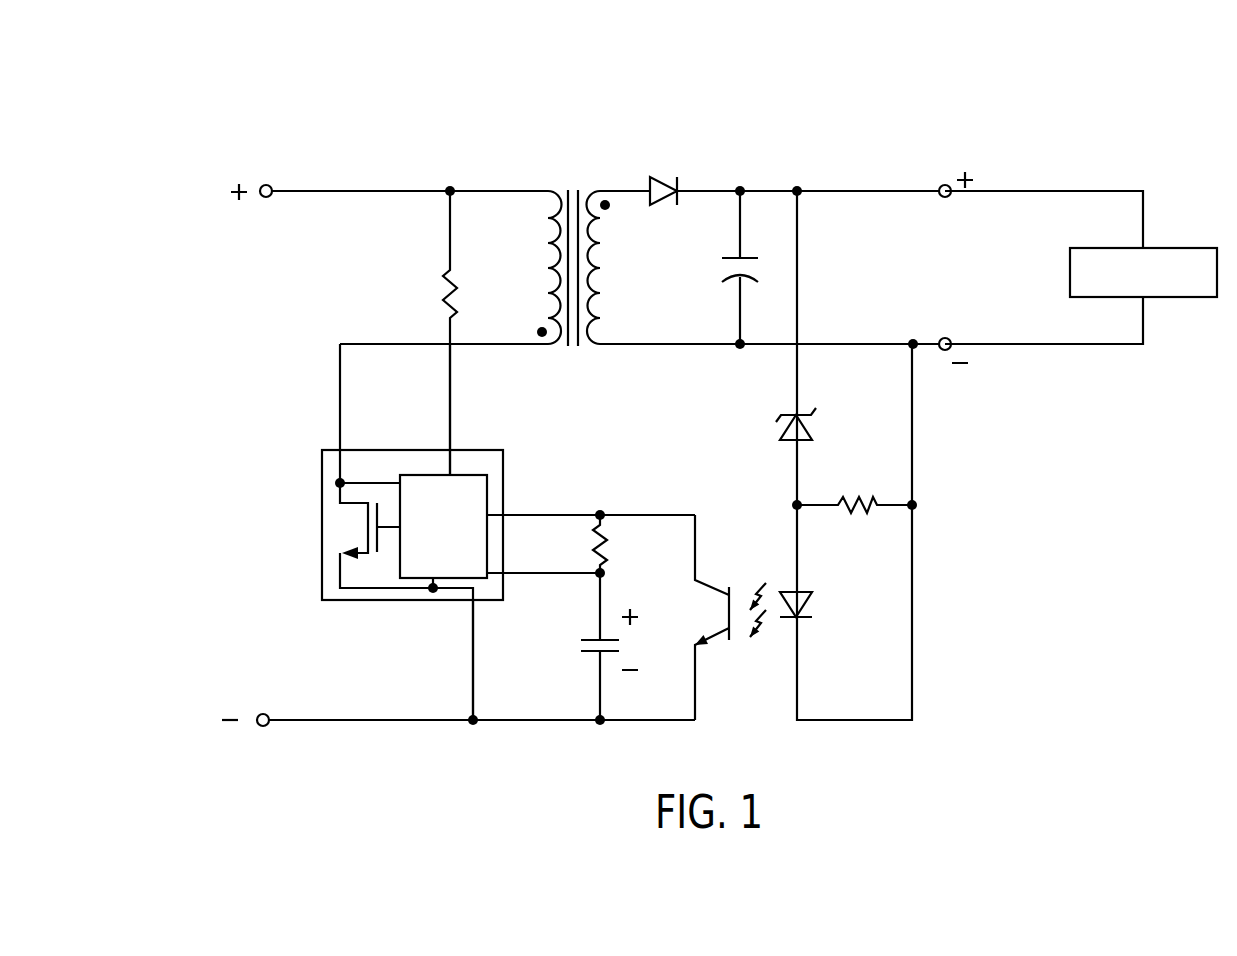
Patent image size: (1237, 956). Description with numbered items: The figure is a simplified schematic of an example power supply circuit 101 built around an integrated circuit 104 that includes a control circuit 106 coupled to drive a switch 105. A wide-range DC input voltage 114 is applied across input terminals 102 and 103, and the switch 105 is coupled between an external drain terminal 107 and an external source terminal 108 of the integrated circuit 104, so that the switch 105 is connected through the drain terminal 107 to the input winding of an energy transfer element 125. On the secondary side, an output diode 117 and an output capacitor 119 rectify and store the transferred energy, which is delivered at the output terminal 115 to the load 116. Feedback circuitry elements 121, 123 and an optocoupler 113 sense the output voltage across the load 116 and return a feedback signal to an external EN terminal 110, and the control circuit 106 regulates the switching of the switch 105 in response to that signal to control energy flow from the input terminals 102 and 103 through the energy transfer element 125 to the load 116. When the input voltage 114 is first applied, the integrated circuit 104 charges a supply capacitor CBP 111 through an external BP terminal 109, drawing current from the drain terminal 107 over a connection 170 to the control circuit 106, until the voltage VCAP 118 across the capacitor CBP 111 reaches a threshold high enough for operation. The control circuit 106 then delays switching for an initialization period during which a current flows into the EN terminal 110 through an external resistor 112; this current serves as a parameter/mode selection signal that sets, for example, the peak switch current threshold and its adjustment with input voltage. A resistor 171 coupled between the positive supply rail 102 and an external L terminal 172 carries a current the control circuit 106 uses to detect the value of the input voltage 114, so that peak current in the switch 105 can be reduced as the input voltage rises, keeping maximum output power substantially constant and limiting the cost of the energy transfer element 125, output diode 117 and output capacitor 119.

The power supply circuit 101 is at (1176, 100).
The input terminal 102 is at (232, 198).
The input terminal 103 is at (258, 702).
The integrated circuit 104 is at (332, 602).
The switch 105 is at (343, 527).
The control circuit 106 is at (417, 580).
The drain terminal 107 is at (332, 420).
The source terminal 108 is at (457, 642).
The BP terminal 109 is at (513, 573).
The EN terminal 110 is at (552, 492).
The supply capacitor CBP 111 is at (558, 667).
The resistor 112 is at (610, 542).
The optocoupler 113 is at (752, 648).
The DC input voltage 114 is at (207, 435).
The output terminal 115 is at (950, 173).
The load 116 is at (1170, 247).
The output diode 117 is at (663, 177).
The voltage VCAP 118 is at (653, 673).
The output capacitor 119 is at (713, 270).
The feedback circuitry element 121 is at (777, 432).
The feedback circuitry element 123 is at (858, 493).
The energy transfer element 125 is at (573, 185).
The connection 170 is at (375, 472).
The resistor 171 is at (467, 283).
The L terminal 172 is at (470, 432).